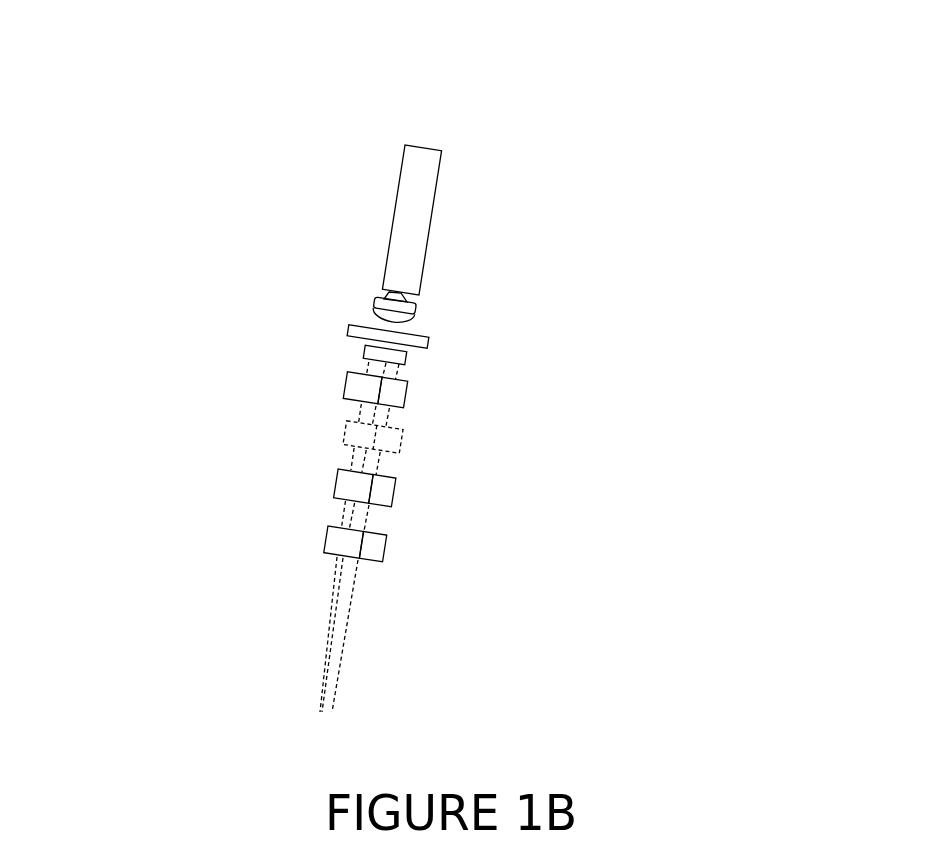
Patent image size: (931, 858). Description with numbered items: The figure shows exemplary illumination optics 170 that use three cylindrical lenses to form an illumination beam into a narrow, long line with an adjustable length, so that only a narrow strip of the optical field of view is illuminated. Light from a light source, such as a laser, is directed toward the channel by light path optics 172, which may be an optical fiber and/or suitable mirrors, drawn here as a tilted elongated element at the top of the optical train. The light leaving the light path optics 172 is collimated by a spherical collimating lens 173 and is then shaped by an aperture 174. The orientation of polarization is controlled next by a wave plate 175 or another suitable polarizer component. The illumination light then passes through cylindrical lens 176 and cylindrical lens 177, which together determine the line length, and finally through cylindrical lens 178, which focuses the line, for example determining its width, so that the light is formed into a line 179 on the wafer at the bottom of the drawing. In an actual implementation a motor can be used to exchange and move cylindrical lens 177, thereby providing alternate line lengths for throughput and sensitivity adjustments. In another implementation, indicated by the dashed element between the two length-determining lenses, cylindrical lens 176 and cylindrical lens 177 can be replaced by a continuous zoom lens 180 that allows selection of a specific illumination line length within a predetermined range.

The illumination optics 170 is at (580, 103).
The light path optics 172 is at (430, 214).
The spherical collimating lens 173 is at (415, 312).
The aperture 174 is at (348, 329).
The wave plate 175 is at (405, 357).
The cylindrical lens 176 is at (349, 386).
The cylindrical lens 177 is at (337, 481).
The cylindrical lens 178 is at (385, 548).
The line 179 is at (327, 713).
The continuous zoom lens 180 is at (403, 438).